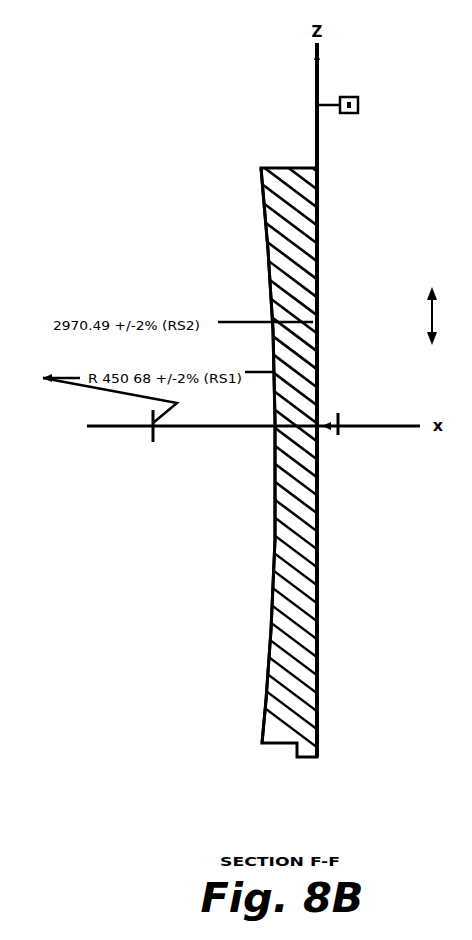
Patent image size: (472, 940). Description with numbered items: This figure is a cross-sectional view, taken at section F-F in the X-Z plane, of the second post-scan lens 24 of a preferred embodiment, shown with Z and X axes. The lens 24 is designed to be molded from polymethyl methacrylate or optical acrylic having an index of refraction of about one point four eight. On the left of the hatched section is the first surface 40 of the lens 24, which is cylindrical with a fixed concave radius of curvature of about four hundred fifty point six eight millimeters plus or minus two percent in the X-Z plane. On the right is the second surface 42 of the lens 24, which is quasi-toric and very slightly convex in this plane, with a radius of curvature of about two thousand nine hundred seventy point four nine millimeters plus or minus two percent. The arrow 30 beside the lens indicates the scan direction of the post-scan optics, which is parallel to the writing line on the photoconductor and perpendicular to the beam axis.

The second post-scan lens 24 is at (188, 187).
The arrow indicating scan direction 30 is at (426, 317).
The first surface 40 is at (275, 558).
The second surface 42 is at (320, 587).